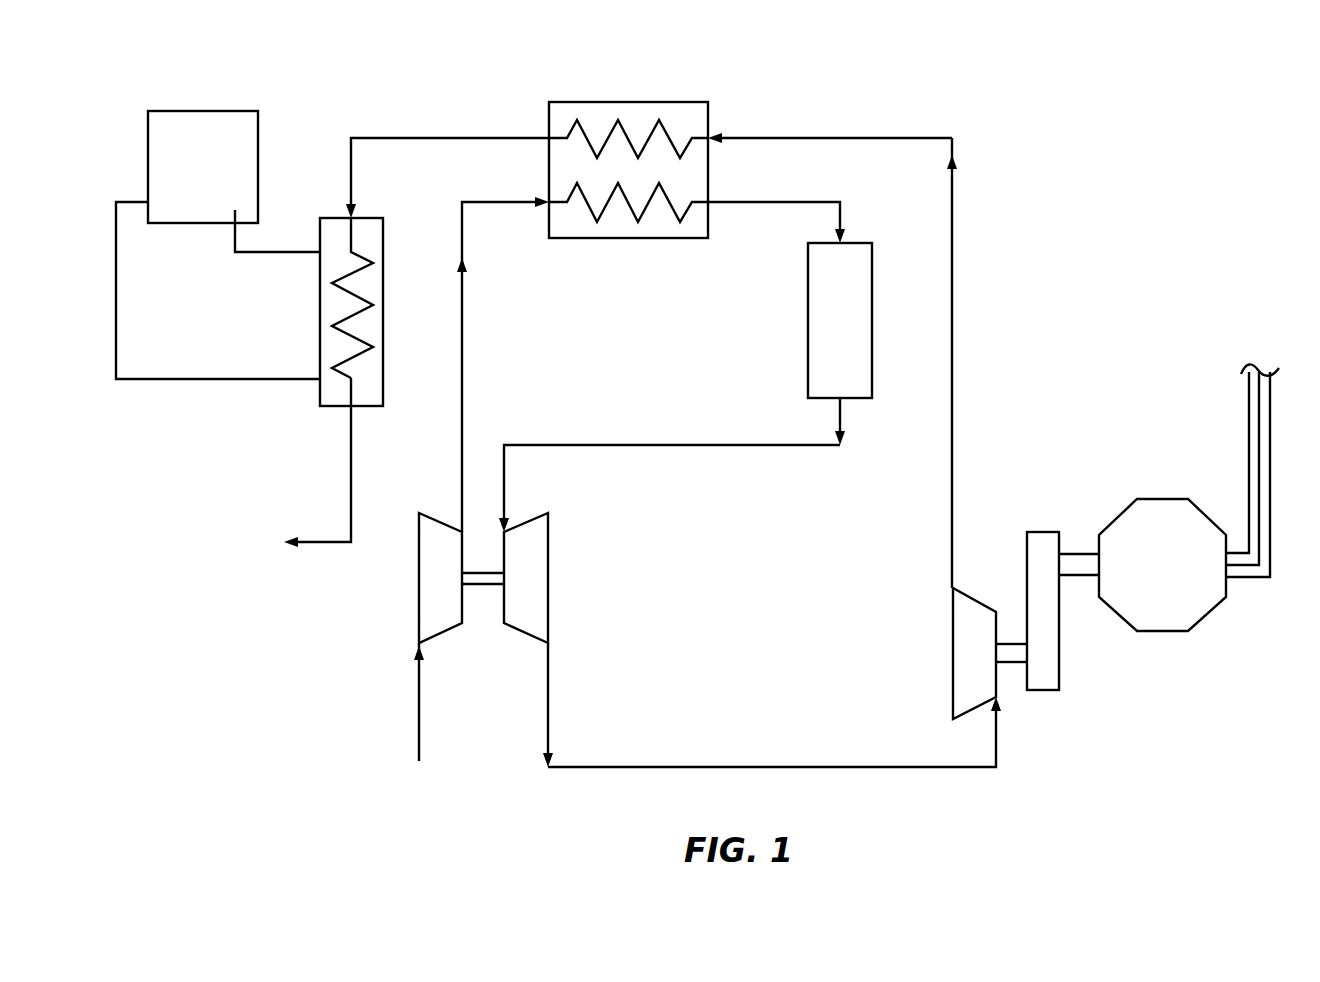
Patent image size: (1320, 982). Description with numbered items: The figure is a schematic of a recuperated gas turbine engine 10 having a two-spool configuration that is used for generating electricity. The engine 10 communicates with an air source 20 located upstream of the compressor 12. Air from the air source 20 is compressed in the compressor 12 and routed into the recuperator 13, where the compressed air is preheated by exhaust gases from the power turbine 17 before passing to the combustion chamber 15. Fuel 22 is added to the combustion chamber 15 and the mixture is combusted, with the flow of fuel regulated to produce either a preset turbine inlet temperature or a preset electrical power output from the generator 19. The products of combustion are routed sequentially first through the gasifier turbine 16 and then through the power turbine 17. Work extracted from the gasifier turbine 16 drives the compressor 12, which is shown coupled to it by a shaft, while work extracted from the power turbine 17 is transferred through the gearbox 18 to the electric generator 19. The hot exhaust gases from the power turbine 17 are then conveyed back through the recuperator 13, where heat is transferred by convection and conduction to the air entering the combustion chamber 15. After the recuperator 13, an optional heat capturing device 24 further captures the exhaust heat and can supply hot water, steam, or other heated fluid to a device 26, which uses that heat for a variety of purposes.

The recuperated gas turbine engine 10 is at (419, 42).
The compressor 12 is at (456, 596).
The recuperator 13 is at (652, 102).
The combustion chamber 15 is at (856, 334).
The gasifier turbine 16 is at (541, 596).
The power turbine 17 is at (990, 671).
The gearbox 18 is at (1043, 532).
The electric generator 19 is at (1178, 582).
The air source 20 is at (407, 761).
The fuel 22 is at (889, 205).
The heat capturing device 24 is at (383, 292).
The device 26 is at (220, 184).